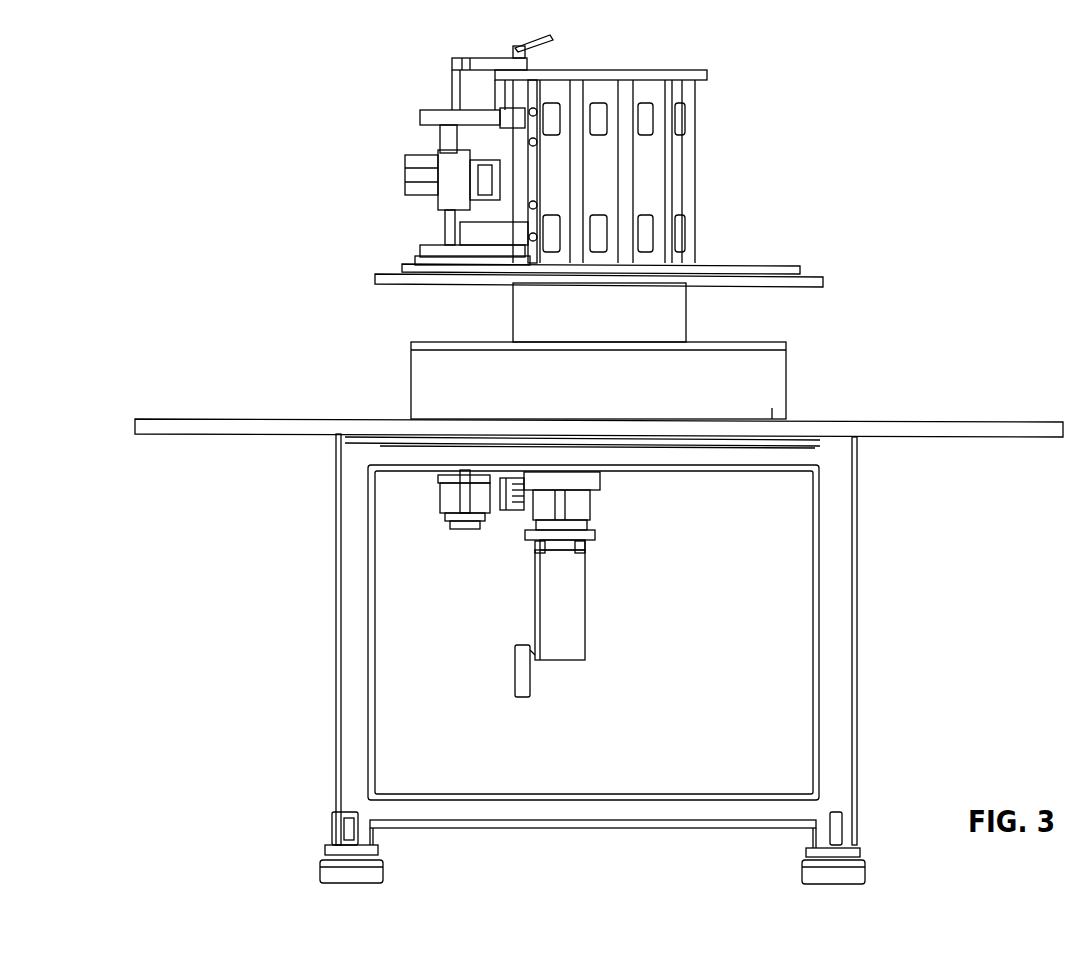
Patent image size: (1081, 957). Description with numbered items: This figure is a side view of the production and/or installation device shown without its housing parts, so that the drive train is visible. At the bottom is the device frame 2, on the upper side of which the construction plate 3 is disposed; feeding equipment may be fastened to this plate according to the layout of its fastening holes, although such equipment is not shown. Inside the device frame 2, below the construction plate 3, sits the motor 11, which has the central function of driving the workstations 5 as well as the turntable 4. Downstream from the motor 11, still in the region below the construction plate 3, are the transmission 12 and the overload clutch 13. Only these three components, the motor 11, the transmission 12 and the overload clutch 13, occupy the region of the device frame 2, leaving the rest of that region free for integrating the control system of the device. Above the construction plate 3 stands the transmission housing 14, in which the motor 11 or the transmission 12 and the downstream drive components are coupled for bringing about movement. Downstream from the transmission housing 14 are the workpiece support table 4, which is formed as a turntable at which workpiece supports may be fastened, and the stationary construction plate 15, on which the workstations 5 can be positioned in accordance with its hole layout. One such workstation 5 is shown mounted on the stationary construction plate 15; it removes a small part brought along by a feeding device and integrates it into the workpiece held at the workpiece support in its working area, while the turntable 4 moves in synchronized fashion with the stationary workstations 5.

The device frame 2 is at (632, 822).
The construction plate 3 is at (918, 420).
The workpiece support table 4 is at (815, 278).
The workstation 5 is at (420, 105).
The motor 11 is at (567, 630).
The transmission 12 is at (580, 505).
The overload clutch 13 is at (440, 488).
The transmission housing 14 is at (775, 385).
The stationary construction plate 15 is at (748, 265).